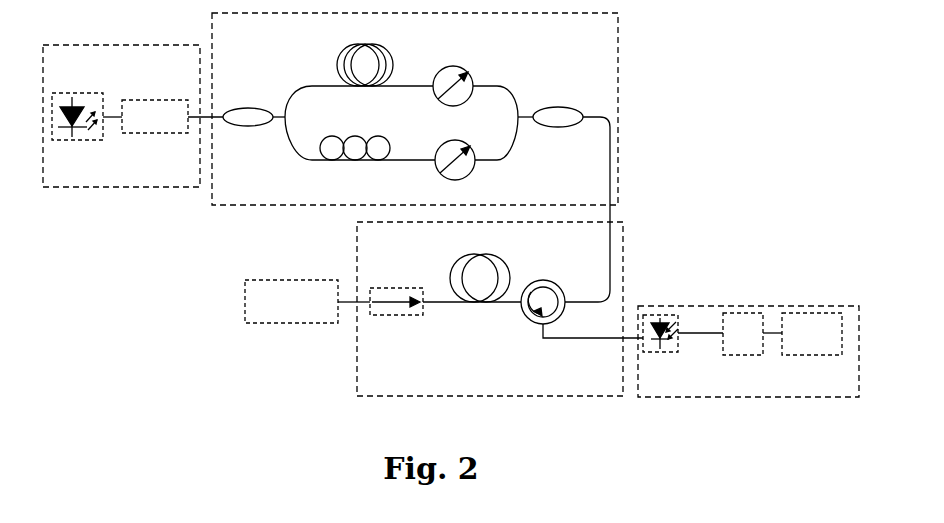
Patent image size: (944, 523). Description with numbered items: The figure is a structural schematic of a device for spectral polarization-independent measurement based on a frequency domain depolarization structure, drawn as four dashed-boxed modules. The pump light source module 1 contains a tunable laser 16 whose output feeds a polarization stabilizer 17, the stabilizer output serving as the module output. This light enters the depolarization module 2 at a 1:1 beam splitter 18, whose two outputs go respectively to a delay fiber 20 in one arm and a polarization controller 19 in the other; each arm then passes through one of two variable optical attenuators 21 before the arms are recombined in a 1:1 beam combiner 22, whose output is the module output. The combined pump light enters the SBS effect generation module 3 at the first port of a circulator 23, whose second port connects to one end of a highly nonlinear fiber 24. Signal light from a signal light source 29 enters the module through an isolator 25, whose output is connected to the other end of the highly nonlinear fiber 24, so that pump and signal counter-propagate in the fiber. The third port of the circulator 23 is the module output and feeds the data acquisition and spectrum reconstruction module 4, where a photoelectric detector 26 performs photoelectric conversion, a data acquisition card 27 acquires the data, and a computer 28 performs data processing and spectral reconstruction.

The pump light source module 1 is at (120, 45).
The depolarization module 2 is at (621, 103).
The SBS effect generation module 3 is at (625, 280).
The data acquisition and spectrum reconstruction module 4 is at (747, 306).
The tunable laser 16 is at (73, 140).
The polarization stabilizer 17 is at (157, 100).
The 1:1 beam splitter 18 is at (248, 108).
The polarization controller 19 is at (357, 162).
The delay fiber 20 is at (390, 68).
The variable optical attenuator 21 is at (448, 66).
The 1:1 beam combiner 22 is at (560, 127).
The circulator 23 is at (547, 282).
The highly nonlinear fiber 24 is at (487, 302).
The isolator 25 is at (393, 315).
The photoelectric detector 26 is at (661, 350).
The data acquisition card 27 is at (740, 355).
The computer 28 is at (810, 355).
The signal light source 29 is at (292, 323).